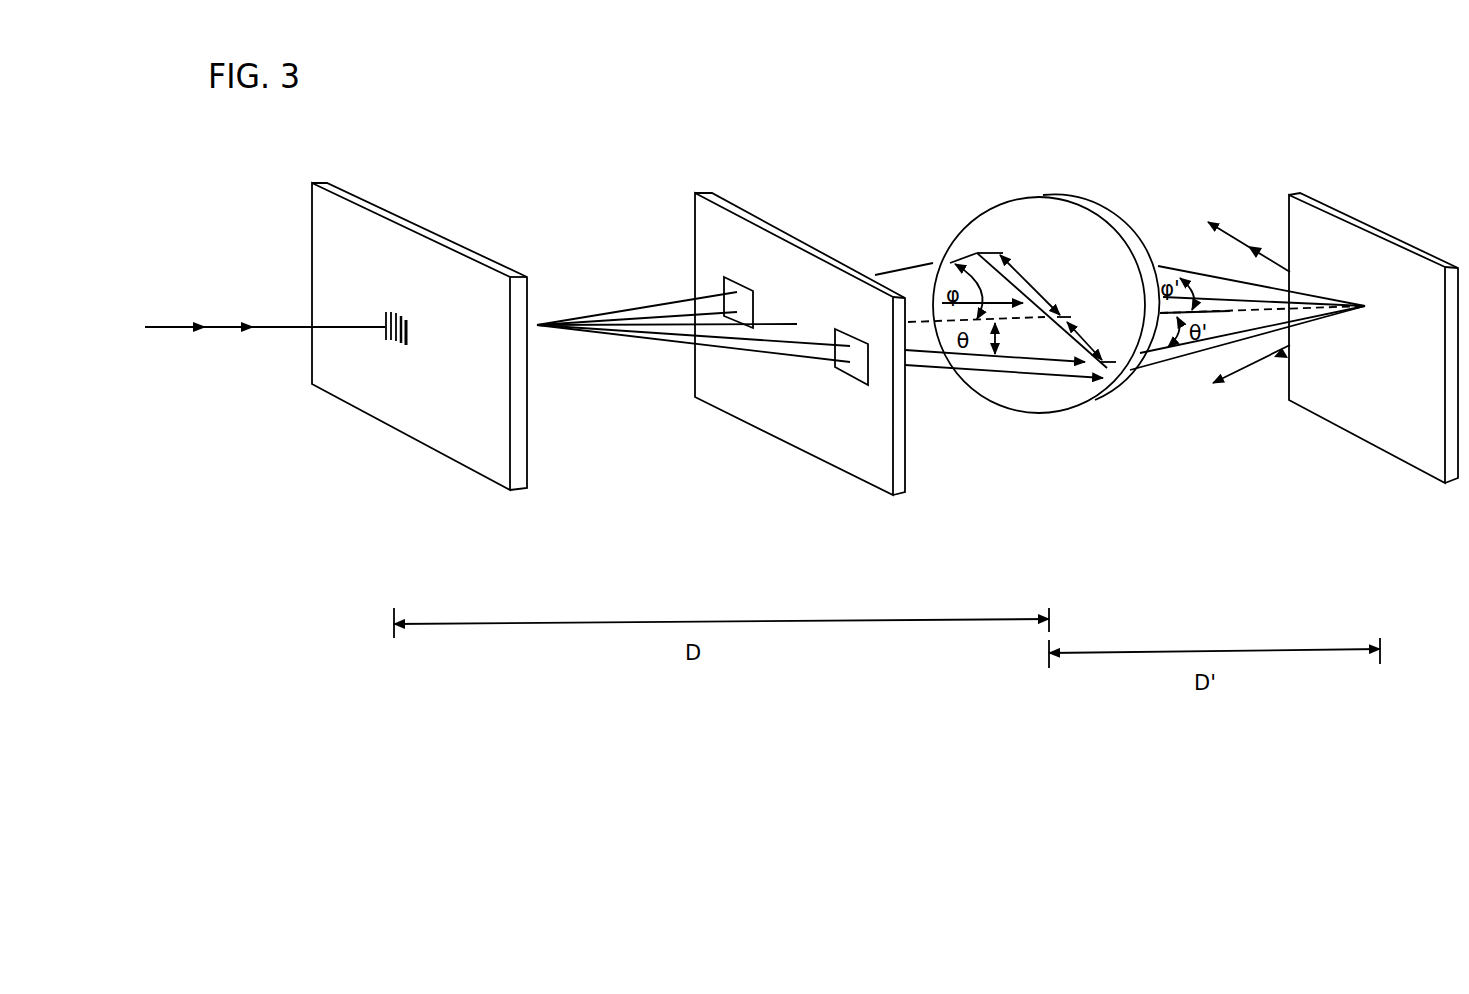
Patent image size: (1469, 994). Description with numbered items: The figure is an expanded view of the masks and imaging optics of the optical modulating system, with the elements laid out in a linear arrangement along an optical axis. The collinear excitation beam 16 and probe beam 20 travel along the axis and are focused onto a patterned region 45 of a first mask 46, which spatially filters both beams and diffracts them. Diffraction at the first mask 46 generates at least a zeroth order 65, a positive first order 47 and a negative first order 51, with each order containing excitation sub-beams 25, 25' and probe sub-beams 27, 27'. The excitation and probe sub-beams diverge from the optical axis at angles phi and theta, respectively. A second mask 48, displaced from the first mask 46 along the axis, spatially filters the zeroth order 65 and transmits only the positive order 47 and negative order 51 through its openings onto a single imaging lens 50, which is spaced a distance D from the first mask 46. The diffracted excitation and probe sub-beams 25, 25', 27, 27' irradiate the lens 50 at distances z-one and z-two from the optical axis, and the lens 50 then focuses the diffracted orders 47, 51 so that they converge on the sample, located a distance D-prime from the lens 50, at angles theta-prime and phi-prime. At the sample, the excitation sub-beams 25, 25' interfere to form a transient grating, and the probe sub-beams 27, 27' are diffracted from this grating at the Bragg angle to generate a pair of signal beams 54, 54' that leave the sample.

The probe optical beam 20 is at (164, 328).
The excitation optical beam 16 is at (219, 333).
The patterned region 45 is at (398, 310).
The first mask 46 is at (452, 440).
The negative diffracted order 51 is at (680, 290).
The zeroth diffracted order 65 is at (790, 320).
The positive diffracted order 47 is at (803, 368).
The second mask 48 is at (857, 470).
The excitation sub-beam 25' is at (921, 246).
The excitation sub-beam 25 is at (1004, 386).
The probe sub-beam 27' is at (1127, 314).
The probe sub-beam 27 is at (1217, 329).
The imaging lens 50 is at (1050, 405).
The signal beam 54' is at (1249, 231).
The signal beam 54 is at (1251, 383).